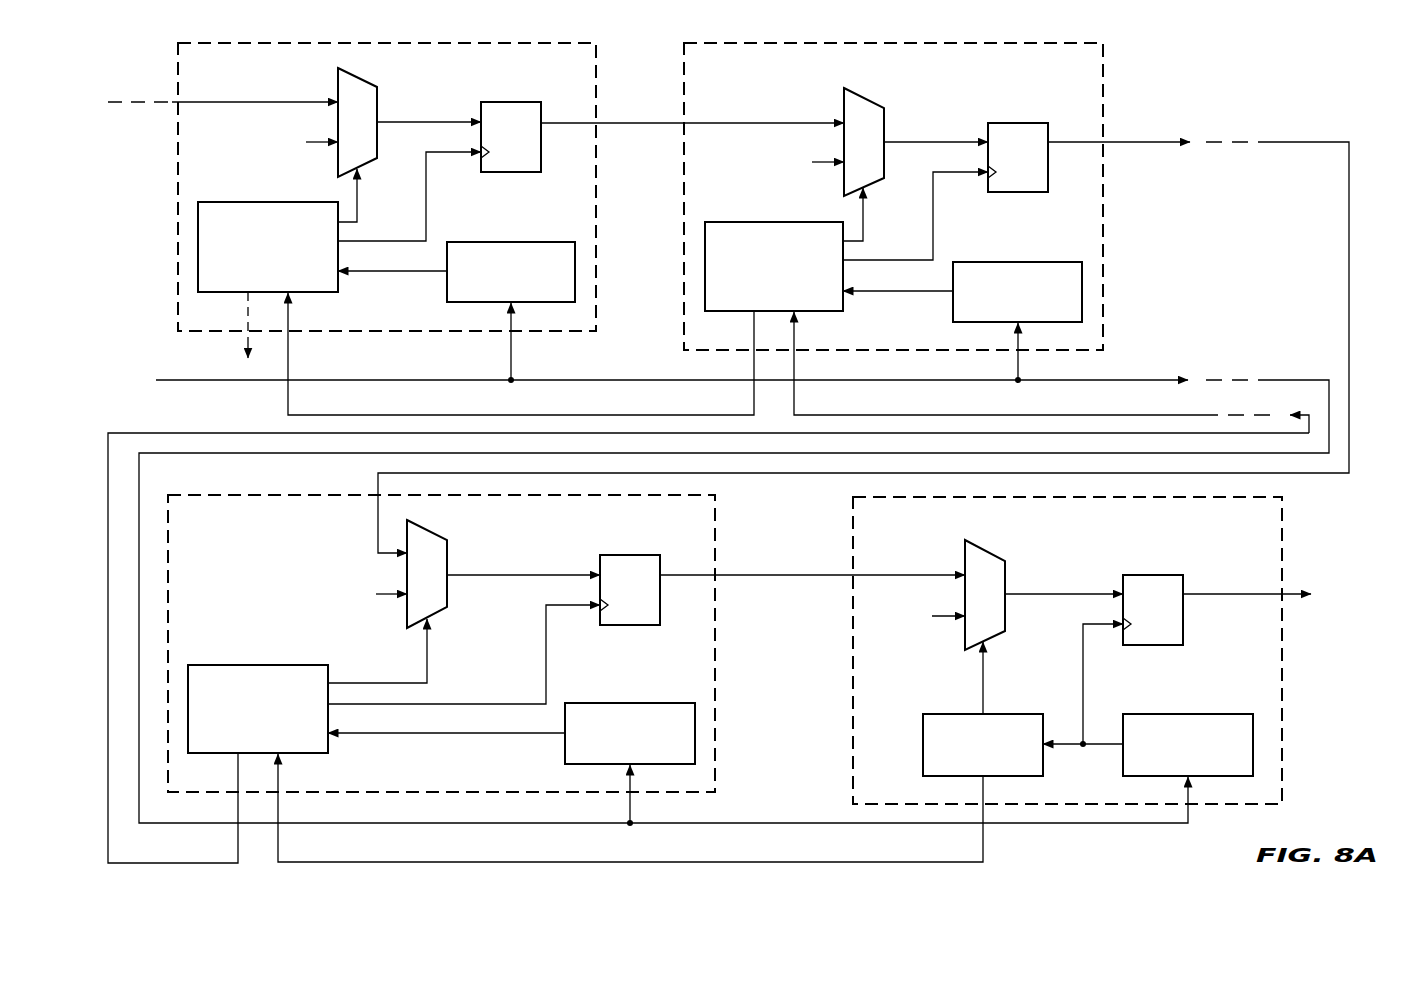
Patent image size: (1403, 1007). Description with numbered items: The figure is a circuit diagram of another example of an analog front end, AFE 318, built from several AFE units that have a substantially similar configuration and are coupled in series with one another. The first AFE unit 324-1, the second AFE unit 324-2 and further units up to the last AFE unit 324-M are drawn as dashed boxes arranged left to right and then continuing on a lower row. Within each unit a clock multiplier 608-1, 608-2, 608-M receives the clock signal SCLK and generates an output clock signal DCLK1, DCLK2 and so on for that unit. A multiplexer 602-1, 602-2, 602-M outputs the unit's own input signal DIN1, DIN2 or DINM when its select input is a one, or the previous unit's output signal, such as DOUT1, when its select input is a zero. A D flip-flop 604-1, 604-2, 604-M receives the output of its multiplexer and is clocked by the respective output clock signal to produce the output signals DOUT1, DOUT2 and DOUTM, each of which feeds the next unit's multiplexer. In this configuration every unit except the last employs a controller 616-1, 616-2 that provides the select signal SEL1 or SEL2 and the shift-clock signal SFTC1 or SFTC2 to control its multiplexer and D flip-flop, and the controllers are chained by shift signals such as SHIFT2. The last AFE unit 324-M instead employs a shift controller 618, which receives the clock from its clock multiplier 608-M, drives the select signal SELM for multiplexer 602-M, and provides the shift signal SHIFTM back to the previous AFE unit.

The AFE 318 is at (1240, 92).
The AFE unit 324-1 is at (283, 79).
The AFE unit 324-2 is at (790, 79).
The AFE unit 324-M is at (940, 533).
The multiplexer 602-1 is at (379, 103).
The multiplexer 602-2 is at (885, 123).
The multiplexer 602-M is at (1006, 574).
The D flip-flop 604-1 is at (510, 102).
The D flip-flop 604-2 is at (1018, 123).
The D flip-flop 604-M is at (1153, 575).
The clock multiplier 608-1 is at (535, 242).
The clock multiplier 608-2 is at (1042, 262).
The clock multiplier 608-M is at (1222, 714).
The controller 616-1 is at (295, 274).
The controller 616-2 is at (801, 294).
The shift controller 618 is at (943, 714).